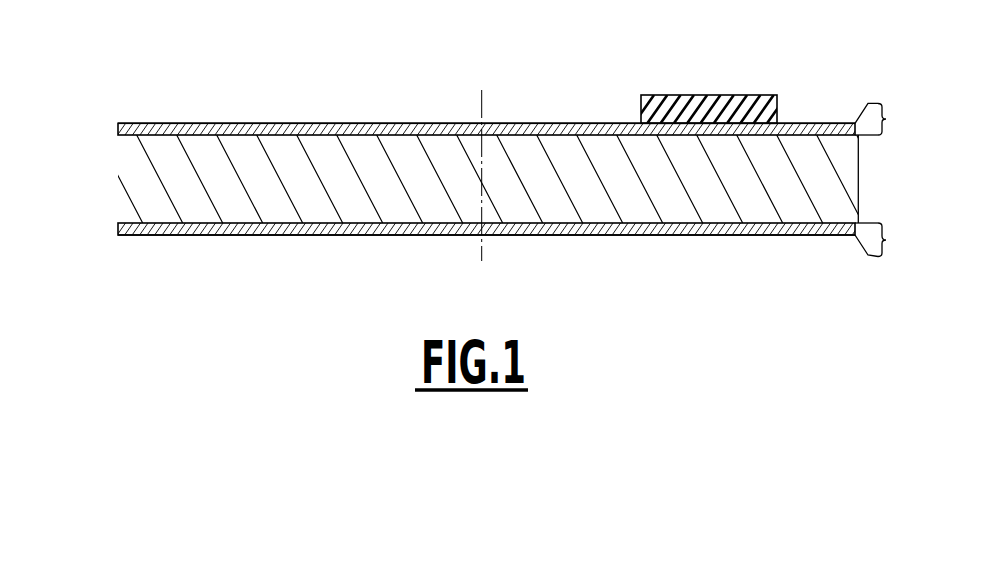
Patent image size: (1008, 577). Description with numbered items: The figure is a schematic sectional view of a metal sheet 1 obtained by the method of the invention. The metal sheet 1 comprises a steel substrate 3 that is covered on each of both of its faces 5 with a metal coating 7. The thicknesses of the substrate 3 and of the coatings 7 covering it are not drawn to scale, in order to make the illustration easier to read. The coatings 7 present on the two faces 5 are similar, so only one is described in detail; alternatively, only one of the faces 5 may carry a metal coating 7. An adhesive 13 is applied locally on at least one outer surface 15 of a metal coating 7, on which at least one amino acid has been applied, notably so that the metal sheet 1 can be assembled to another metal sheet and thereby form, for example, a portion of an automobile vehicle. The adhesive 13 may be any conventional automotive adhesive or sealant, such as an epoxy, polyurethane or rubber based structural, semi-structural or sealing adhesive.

The metal sheet 1 is at (461, 162).
The steel substrate 3 is at (859, 136).
The faces 5 is at (353, 130).
The metal coating 7 is at (877, 182).
The adhesive 13 is at (748, 102).
The outer surface 15 is at (548, 125).